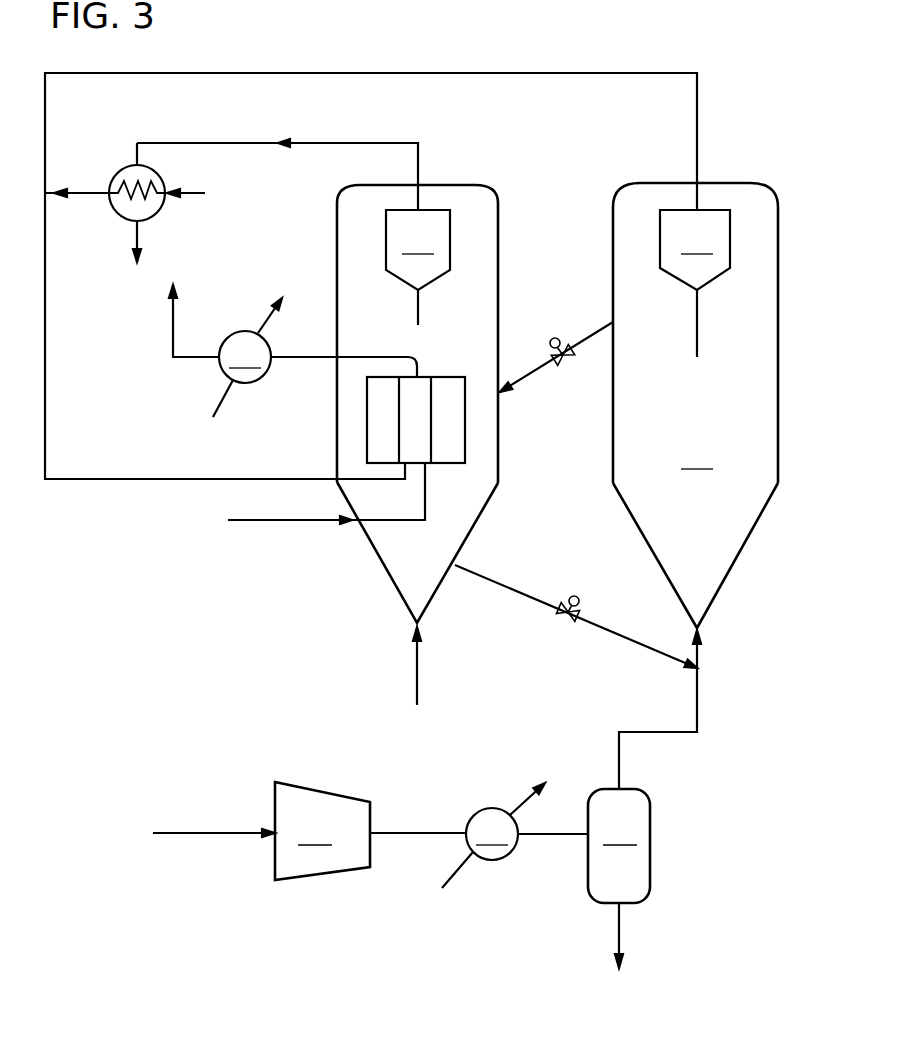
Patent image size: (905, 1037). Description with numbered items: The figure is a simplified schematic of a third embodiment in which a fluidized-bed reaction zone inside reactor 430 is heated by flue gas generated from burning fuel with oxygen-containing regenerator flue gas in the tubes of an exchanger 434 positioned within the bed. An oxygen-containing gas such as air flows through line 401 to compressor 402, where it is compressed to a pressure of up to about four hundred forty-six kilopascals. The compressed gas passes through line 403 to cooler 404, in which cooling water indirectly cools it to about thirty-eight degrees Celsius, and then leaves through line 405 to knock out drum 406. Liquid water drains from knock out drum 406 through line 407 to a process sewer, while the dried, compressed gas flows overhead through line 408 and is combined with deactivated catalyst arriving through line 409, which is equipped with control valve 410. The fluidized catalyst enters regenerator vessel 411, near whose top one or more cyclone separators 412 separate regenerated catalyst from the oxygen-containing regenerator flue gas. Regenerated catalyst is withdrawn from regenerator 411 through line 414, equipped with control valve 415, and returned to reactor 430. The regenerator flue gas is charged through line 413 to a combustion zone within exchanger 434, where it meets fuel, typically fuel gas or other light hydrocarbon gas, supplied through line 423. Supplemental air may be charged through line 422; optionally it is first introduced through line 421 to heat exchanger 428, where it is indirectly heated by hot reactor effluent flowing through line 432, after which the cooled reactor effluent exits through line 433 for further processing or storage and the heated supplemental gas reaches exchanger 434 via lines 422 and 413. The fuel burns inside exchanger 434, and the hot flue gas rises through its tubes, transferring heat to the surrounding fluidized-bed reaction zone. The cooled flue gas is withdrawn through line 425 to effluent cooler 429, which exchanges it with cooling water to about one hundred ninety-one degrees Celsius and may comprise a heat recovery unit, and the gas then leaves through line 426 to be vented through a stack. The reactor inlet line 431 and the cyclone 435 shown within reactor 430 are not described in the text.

The line 401 is at (212, 830).
The compressor 402 is at (322, 831).
The line 403 is at (442, 830).
The cooler 404 is at (493, 842).
The line 405 is at (532, 838).
The knock out drum 406 is at (619, 846).
The line 407 is at (622, 942).
The line 408 is at (699, 725).
The line 409 is at (630, 641).
The control valve 410 is at (563, 622).
The regenerator vessel 411 is at (695, 405).
The cyclone separators 412 is at (695, 283).
The line 413 is at (699, 152).
The line 414 is at (530, 373).
The control valve 415 is at (568, 362).
The line 421 is at (178, 196).
The line 422 is at (62, 198).
The line 423 is at (285, 524).
The line 425 is at (326, 360).
The line 426 is at (170, 314).
The heat exchanger 428 is at (120, 172).
The effluent cooler 429 is at (247, 363).
The reactor 430 is at (500, 314).
The gas inlet line 431 is at (420, 684).
The line 432 is at (420, 158).
The line 433 is at (130, 258).
The exchanger 434 is at (465, 432).
The cyclone separator 435 is at (418, 267).